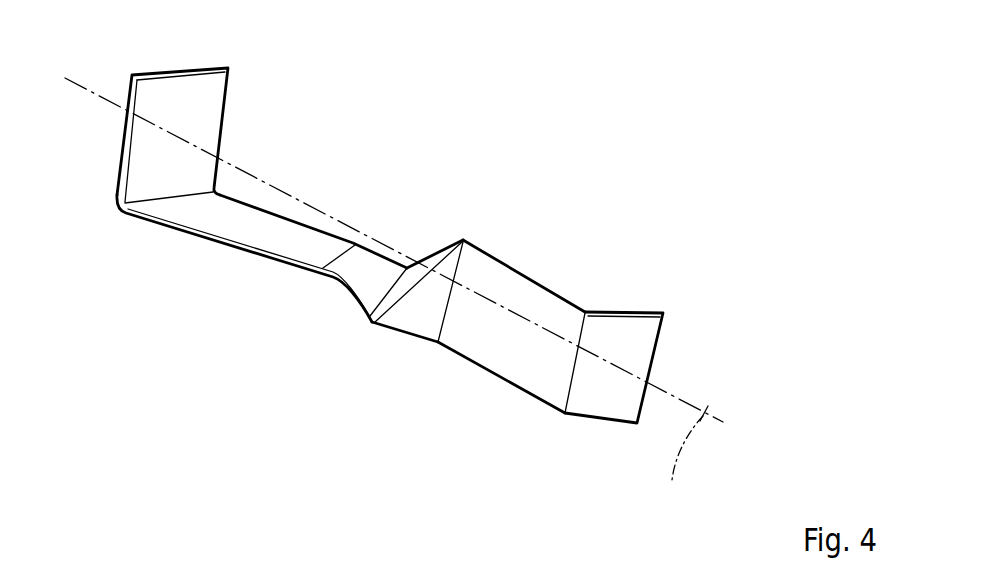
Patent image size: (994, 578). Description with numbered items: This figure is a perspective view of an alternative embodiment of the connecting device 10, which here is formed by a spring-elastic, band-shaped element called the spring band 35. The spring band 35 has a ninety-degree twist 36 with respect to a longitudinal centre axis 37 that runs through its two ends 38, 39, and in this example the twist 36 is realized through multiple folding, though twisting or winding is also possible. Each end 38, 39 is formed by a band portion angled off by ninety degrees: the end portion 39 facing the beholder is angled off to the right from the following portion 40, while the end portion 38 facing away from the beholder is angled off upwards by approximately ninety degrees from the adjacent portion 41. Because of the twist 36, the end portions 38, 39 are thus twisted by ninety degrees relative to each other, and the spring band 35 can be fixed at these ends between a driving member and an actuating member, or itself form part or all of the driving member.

The connecting device 10 is at (732, 175).
The spring band 35 is at (542, 270).
The 90° twist 36 is at (431, 232).
The longitudinal centre axis 37 is at (672, 480).
The end portion 38 is at (210, 110).
The end portion 39 is at (643, 342).
The portion of the spring band 40 is at (513, 358).
The portion of the spring band 41 is at (217, 240).